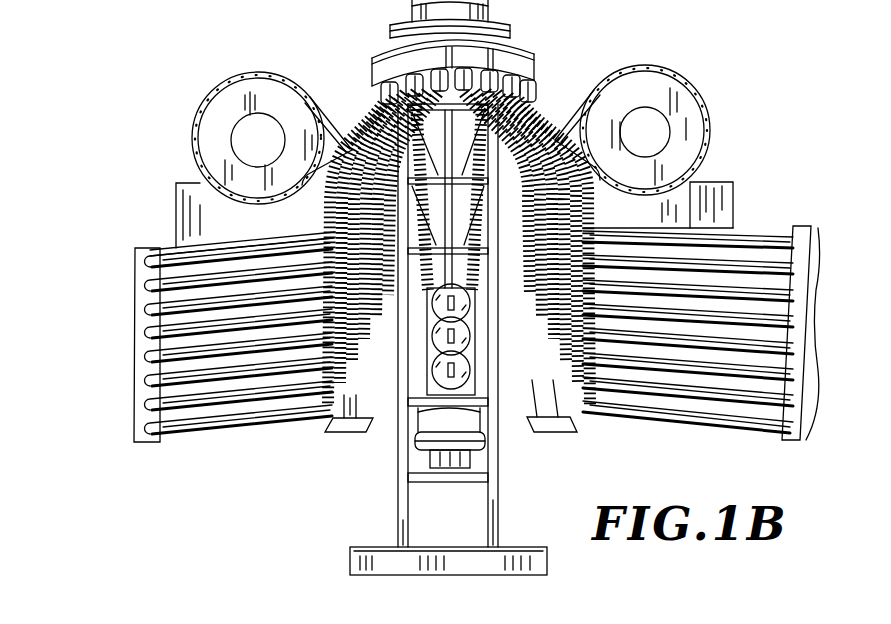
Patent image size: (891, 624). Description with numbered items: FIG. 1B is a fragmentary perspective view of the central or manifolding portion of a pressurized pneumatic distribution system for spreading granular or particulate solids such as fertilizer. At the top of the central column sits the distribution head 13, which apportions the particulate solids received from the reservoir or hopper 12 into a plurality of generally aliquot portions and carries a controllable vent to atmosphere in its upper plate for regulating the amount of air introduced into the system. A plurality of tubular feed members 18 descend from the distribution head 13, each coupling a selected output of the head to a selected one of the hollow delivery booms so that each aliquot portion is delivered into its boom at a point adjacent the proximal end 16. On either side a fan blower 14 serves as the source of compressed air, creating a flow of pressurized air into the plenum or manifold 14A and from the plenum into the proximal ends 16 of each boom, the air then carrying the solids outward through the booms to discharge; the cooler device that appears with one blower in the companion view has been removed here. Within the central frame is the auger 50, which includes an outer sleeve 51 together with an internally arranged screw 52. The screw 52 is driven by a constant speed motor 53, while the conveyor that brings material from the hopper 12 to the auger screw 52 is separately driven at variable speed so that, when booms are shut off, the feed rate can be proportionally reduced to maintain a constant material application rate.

The reservoir 12 is at (723, 207).
The distribution head 13 is at (540, 88).
The fan blower 14 is at (205, 113).
The plenum 14A is at (370, 405).
The proximal ends 16 is at (204, 421).
The tubular feed members 18 is at (346, 218).
The auger 50 is at (447, 339).
The outer sleeve 51 is at (482, 374).
The screw 52 is at (438, 368).
The constant speed motor 53 is at (450, 472).